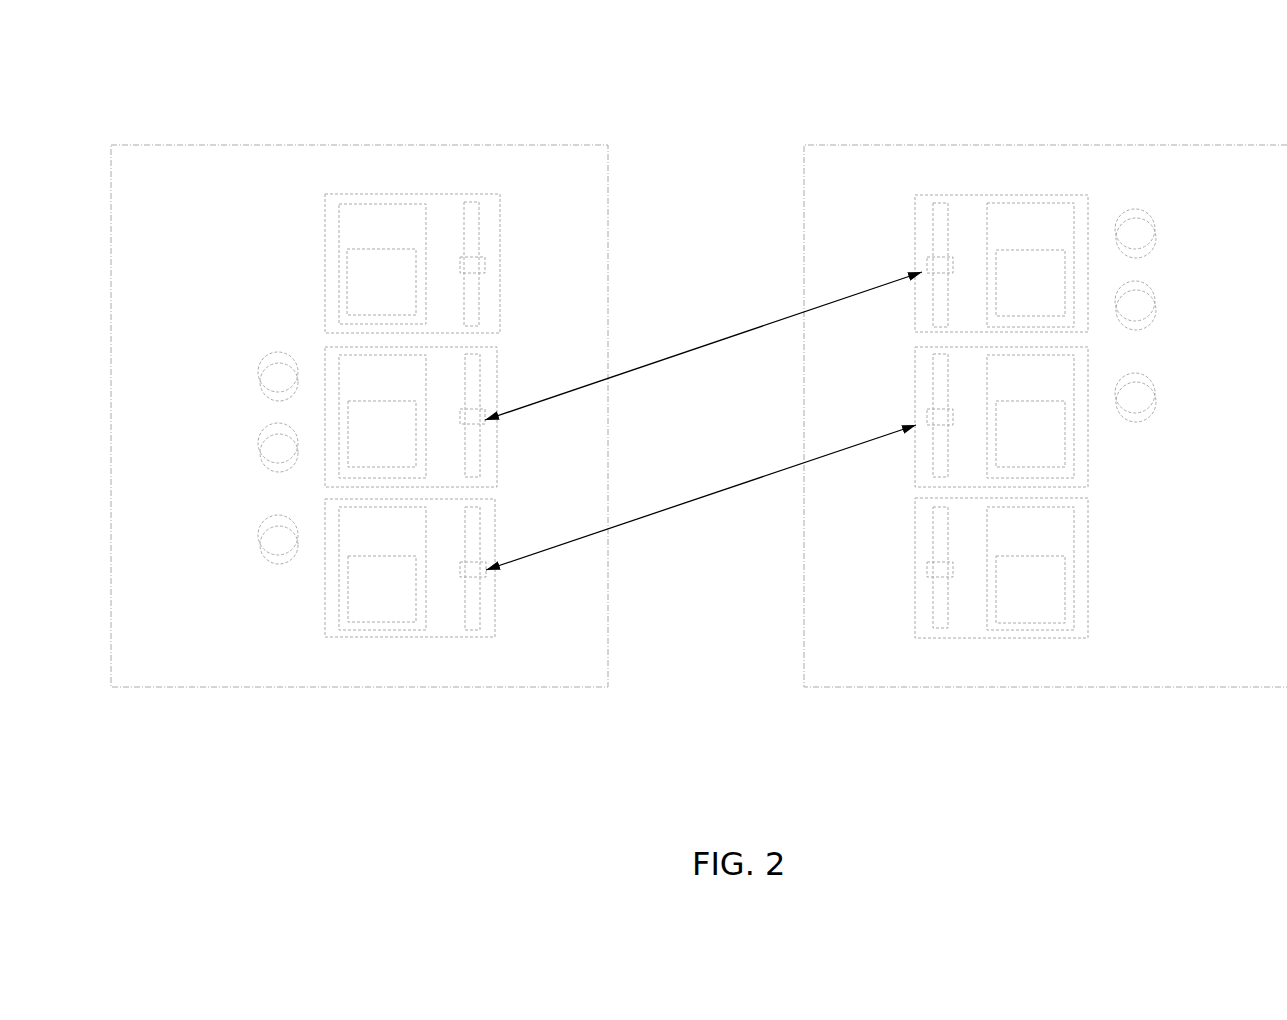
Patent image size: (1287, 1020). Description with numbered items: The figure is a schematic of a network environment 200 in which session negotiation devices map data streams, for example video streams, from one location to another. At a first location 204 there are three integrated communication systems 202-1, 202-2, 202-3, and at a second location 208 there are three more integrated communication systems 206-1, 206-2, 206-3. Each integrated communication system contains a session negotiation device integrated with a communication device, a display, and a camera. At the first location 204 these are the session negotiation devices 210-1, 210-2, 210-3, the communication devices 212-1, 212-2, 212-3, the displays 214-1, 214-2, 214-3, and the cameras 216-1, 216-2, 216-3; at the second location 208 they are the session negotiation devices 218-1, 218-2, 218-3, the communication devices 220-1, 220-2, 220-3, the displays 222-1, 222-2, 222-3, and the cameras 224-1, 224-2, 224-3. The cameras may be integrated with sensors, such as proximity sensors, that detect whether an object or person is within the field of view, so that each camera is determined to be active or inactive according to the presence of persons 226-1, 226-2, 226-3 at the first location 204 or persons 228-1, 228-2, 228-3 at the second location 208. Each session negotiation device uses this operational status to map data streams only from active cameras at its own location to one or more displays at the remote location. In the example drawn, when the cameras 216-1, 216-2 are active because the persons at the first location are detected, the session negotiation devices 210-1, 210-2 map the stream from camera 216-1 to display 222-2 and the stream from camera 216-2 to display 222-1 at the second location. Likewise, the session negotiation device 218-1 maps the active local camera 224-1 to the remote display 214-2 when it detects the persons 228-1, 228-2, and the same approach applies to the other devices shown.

The network environment 200 is at (695, 43).
The first location 204 is at (360, 145).
The second location 208 is at (1055, 145).
The integrated communication system 202-1 is at (410, 637).
The integrated communication system 202-2 is at (497, 347).
The integrated communication system 202-3 is at (413, 194).
The session negotiation device 210-1 is at (382, 589).
The session negotiation device 210-2 is at (382, 434).
The session negotiation device 210-3 is at (381, 282).
The communication device 212-1 is at (382, 568).
The communication device 212-2 is at (382, 416).
The communication device 212-3 is at (382, 264).
The display 214-1 is at (478, 522).
The display 214-2 is at (478, 382).
The display 214-3 is at (479, 225).
The camera 216-1 is at (485, 562).
The camera 216-2 is at (485, 409).
The camera 216-3 is at (485, 258).
The integrated communication system 206-1 is at (1002, 195).
The integrated communication system 206-2 is at (915, 350).
The integrated communication system 206-3 is at (1002, 638).
The session negotiation device 218-1 is at (1030, 283).
The session negotiation device 218-2 is at (1030, 434).
The session negotiation device 218-3 is at (1030, 589).
The communication device 220-1 is at (1030, 265).
The communication device 220-2 is at (1030, 416).
The communication device 220-3 is at (1030, 568).
The display 222-1 is at (934, 227).
The display 222-2 is at (934, 382).
The display 222-3 is at (934, 525).
The camera 224-1 is at (928, 265).
The camera 224-2 is at (928, 410).
The camera 224-3 is at (928, 570).
The person 226-1 is at (257, 540).
The person 226-2 is at (257, 448).
The person 226-3 is at (257, 378).
The person 228-1 is at (1157, 235).
The person 228-2 is at (1157, 307).
The person 228-3 is at (1157, 399).